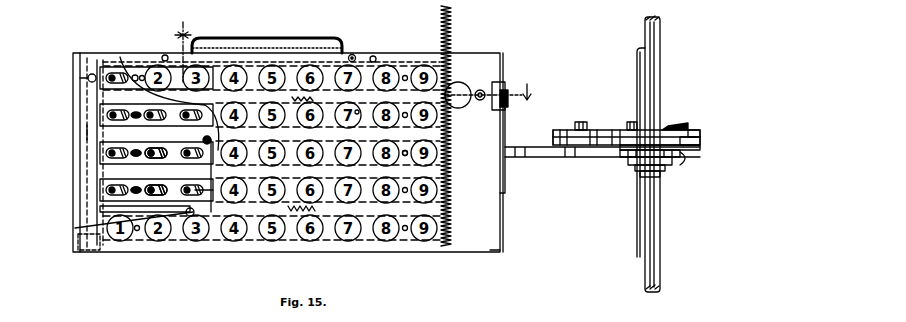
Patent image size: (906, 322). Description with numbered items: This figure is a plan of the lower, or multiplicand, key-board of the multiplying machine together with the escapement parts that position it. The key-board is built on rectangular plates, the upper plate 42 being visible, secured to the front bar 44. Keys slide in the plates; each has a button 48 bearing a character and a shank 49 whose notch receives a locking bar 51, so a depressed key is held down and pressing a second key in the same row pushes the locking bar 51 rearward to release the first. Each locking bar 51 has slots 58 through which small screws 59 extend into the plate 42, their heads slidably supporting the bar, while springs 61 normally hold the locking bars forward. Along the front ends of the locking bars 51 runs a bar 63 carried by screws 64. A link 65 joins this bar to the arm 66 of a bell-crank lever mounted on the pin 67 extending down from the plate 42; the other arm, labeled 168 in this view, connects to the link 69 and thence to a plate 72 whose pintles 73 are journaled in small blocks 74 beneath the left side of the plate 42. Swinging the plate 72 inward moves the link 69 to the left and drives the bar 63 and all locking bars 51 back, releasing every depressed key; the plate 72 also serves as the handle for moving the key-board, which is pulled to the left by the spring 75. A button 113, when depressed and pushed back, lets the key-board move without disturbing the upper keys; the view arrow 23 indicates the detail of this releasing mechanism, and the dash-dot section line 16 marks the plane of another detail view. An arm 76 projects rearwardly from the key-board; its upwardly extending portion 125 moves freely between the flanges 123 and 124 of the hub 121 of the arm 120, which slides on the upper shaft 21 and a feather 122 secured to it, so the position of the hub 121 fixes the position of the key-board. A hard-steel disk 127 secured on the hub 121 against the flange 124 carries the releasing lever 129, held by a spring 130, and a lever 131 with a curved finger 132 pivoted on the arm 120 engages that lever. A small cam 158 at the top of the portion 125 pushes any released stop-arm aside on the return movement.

The front bar 44 is at (78, 179).
The bar 63 is at (88, 133).
The screws 64 is at (90, 79).
The section line 16 is at (183, 51).
The small blocks 74 is at (164, 55).
The plate 72 is at (263, 44).
The pintles 73 is at (352, 54).
The spring 75 is at (440, 12).
The upper plate 42 is at (478, 62).
The button 113 is at (461, 108).
The view arrow 23 is at (527, 93).
The arm 76 is at (516, 158).
The arm 120 is at (569, 158).
The curved finger 132 is at (553, 132).
The lever 131 is at (600, 130).
The feather 122 is at (640, 89).
The upper shaft 21 is at (657, 90).
The spring 130 is at (674, 124).
The releasing lever 129 is at (694, 132).
The disk 127 is at (698, 138).
The flange 124 is at (700, 143).
The upwardly extending portion 125 is at (690, 152).
The small cam 158 is at (695, 160).
The flange 123 is at (690, 164).
The hub 121 is at (672, 176).
The link 69 is at (206, 97).
The link 168 is at (210, 118).
The pin 67 is at (211, 140).
The slots 58 is at (135, 150).
The locking bar 51 is at (172, 150).
The small screws 59 is at (405, 150).
The shank 49 is at (158, 186).
The arm 66 is at (205, 173).
The button 48 is at (358, 110).
The springs 61 is at (305, 133).
The link 65 is at (187, 210).